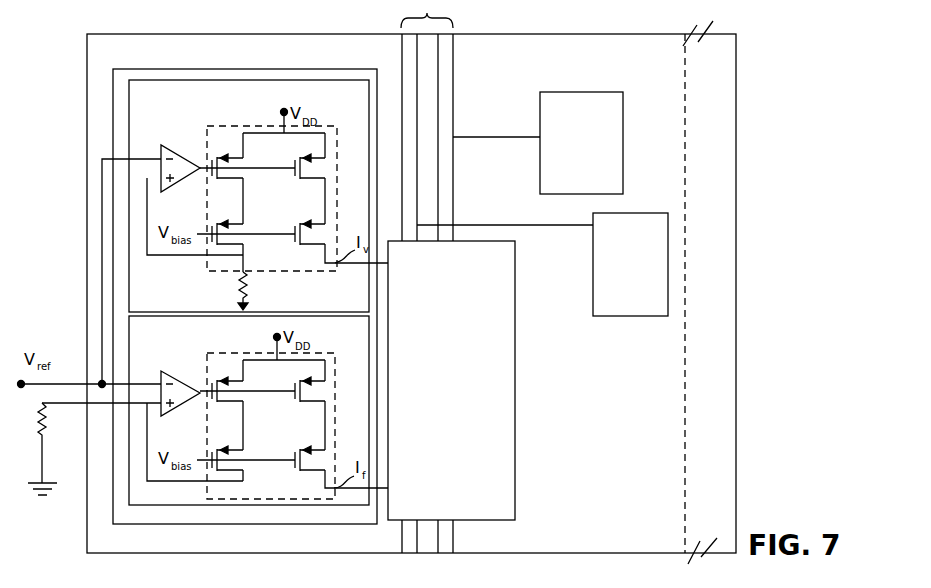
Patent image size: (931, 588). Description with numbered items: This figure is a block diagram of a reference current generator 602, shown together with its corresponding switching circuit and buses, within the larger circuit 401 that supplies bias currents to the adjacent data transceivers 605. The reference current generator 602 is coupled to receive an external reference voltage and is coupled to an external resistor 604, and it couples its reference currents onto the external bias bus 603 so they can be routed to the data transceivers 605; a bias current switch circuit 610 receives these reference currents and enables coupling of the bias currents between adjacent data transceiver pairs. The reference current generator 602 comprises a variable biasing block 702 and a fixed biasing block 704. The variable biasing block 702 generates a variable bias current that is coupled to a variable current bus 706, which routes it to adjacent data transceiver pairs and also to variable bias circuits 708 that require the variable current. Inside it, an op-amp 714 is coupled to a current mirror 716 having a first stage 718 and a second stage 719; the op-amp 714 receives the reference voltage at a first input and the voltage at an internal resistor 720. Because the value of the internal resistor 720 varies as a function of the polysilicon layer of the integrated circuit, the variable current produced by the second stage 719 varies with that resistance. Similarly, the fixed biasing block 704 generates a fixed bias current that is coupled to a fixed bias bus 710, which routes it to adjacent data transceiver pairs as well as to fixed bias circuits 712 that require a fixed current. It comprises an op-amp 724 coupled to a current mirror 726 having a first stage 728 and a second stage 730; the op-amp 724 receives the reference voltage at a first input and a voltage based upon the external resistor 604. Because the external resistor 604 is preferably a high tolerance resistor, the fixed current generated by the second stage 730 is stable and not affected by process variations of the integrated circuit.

The bias circuit 401 is at (310, 34).
The reference current generator 602 is at (113, 113).
The external bias bus 603 is at (427, 14).
The external resistor 604 is at (44, 432).
The data transceivers 605 is at (737, 196).
The bias current switch circuit 610 is at (515, 320).
The variable biasing block 702 is at (258, 80).
The fixed biasing block 704 is at (190, 507).
The variable current bus 706 is at (402, 95).
The variable bias circuits 708 is at (617, 213).
The fixed bias bus 710 is at (455, 82).
The fixed bias circuits 712 is at (568, 92).
The op-amp 714 is at (180, 184).
The current mirror 716 is at (206, 150).
The first stage 718 is at (255, 218).
The second stage 719 is at (333, 195).
The internal resistor 720 is at (238, 291).
The op-amp 724 is at (180, 407).
The current mirror 726 is at (206, 374).
The first stage 728 is at (256, 435).
The second stage 730 is at (334, 407).